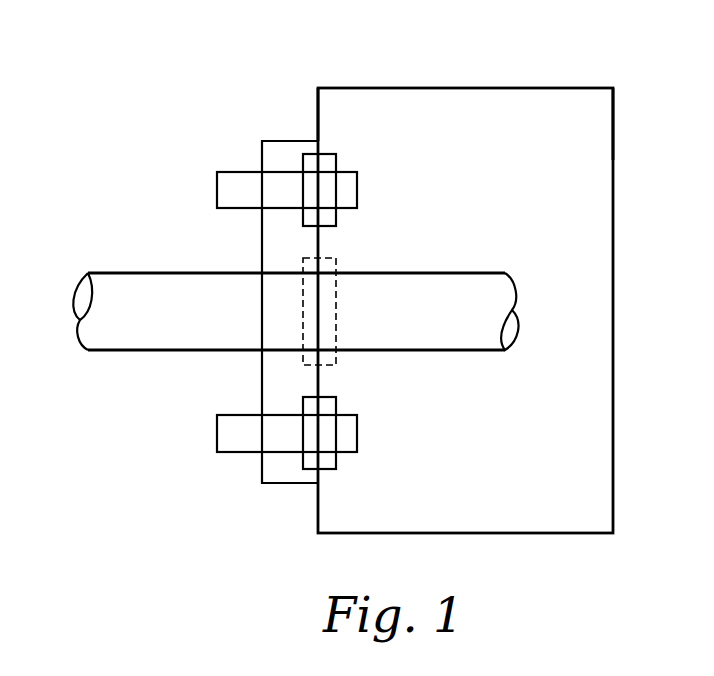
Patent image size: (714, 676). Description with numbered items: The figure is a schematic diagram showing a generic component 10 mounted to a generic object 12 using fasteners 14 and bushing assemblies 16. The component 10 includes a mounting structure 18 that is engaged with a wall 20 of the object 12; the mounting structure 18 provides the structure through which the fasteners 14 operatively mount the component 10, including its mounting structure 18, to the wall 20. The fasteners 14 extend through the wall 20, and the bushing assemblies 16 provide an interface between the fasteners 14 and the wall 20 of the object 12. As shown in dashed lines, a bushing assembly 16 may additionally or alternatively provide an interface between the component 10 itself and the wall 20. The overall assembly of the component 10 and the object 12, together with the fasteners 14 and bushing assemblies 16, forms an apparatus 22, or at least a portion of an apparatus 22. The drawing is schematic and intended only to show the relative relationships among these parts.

The component 10 is at (116, 270).
The object 12 is at (461, 84).
The fasteners 14 is at (223, 171).
The bushing assemblies 16 is at (331, 153).
The mounting structure 18 is at (280, 140).
The wall 20 is at (317, 106).
The apparatus 22 is at (613, 68).